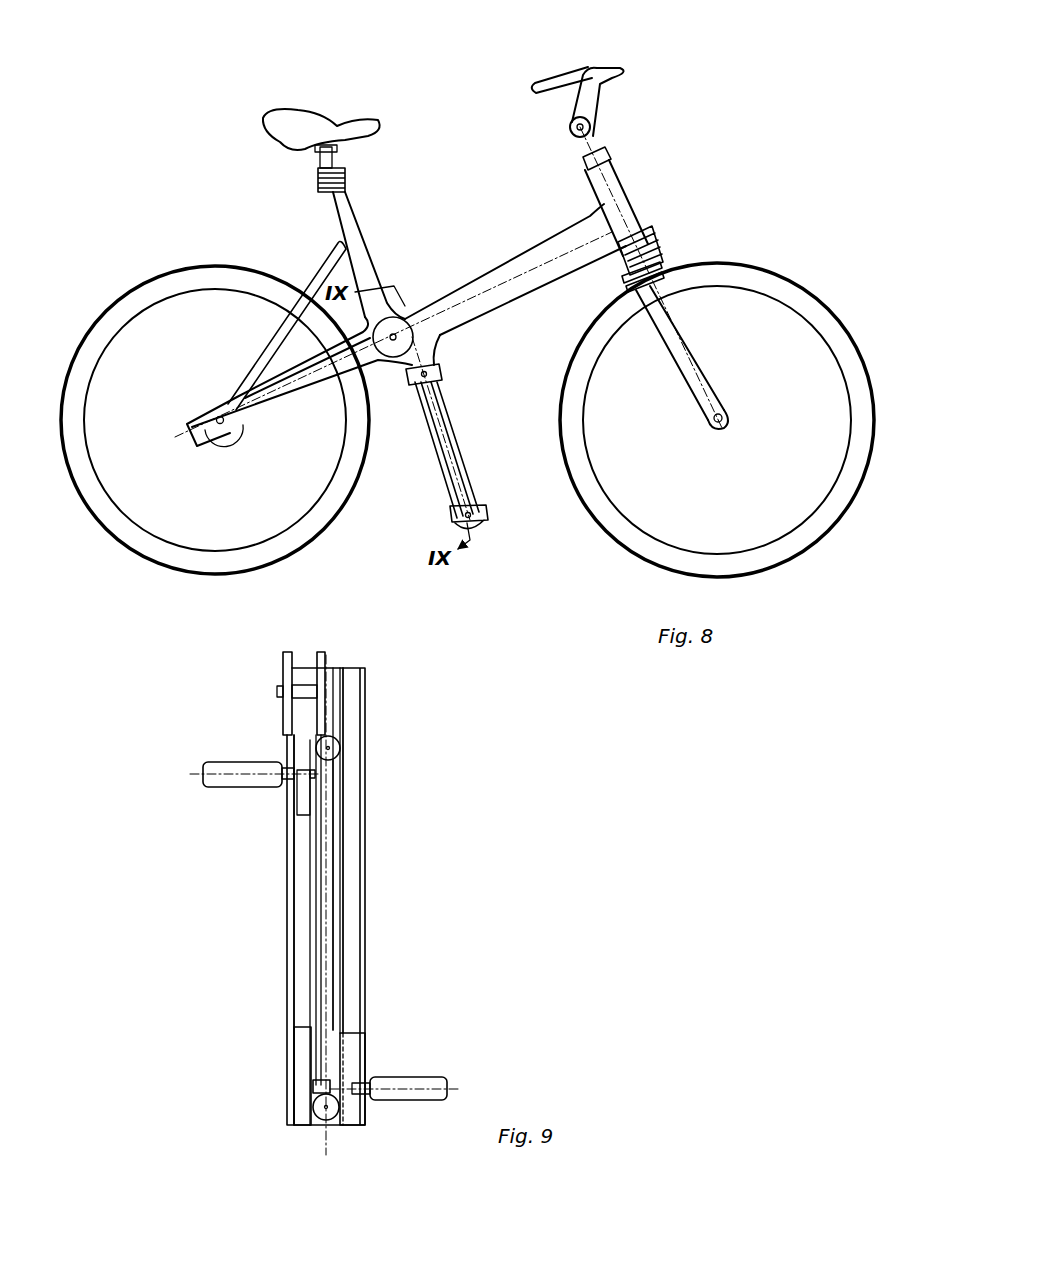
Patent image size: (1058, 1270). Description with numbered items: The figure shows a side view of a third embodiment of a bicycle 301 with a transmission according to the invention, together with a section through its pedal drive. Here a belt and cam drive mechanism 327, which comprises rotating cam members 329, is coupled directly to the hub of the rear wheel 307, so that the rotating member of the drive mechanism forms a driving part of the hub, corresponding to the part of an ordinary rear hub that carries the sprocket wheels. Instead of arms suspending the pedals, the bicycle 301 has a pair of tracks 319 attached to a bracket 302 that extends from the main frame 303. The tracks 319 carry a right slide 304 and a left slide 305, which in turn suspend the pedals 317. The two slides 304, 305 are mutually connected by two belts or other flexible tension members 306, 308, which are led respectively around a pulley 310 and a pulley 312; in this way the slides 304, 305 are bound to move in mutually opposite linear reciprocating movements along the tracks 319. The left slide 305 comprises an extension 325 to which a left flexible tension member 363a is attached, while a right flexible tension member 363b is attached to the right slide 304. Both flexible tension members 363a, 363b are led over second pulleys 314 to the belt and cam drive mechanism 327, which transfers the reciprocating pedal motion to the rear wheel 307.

In FIG. 8, the bicycle 301 is at (665, 178).
In FIG. 8, the bracket 302 is at (444, 413).
In FIG. 8, the main frame 303 is at (478, 292).
In FIG. 9, the right slide 304 is at (297, 797).
In FIG. 9, the left slide 305 is at (355, 1032).
In FIG. 9, the flexible tension member 306 is at (312, 1028).
In FIG. 8, the rear wheel 307 is at (185, 275).
In FIG. 9, the flexible tension member 308 is at (342, 920).
In FIG. 9, the pulley 310 is at (313, 1098).
In FIG. 9, the pulley 312 is at (337, 748).
In FIG. 8, the second pulleys 314 is at (418, 343).
In FIG. 9, the second pulleys 314 is at (281, 664).
In FIG. 8, the pedals 317 is at (410, 378).
In FIG. 9, the pedals 317 is at (217, 762).
In FIG. 8, the tracks 319 is at (455, 470).
In FIG. 9, the tracks 319 is at (297, 896).
In FIG. 9, the extension 325 is at (333, 1080).
In FIG. 8, the belt and cam drive mechanism 327 is at (221, 462).
In FIG. 8, the rotating cam members 329 is at (240, 442).
In FIG. 9, the left flexible tension member 363a is at (320, 830).
In FIG. 8, the right flexible tension member 363b is at (290, 362).
In FIG. 9, the right flexible tension member 363b is at (287, 857).